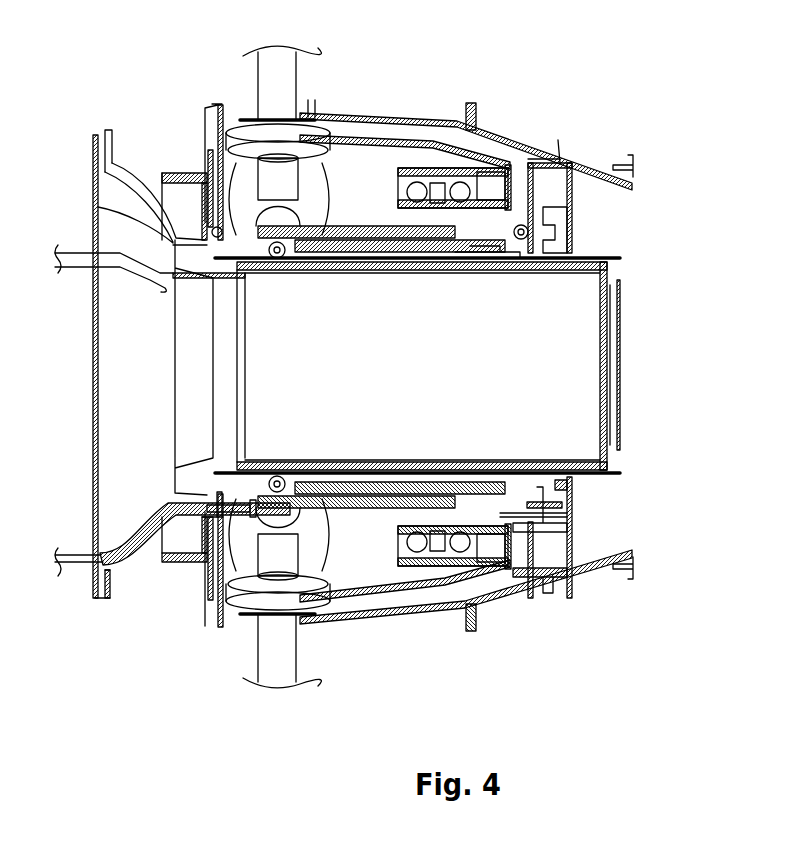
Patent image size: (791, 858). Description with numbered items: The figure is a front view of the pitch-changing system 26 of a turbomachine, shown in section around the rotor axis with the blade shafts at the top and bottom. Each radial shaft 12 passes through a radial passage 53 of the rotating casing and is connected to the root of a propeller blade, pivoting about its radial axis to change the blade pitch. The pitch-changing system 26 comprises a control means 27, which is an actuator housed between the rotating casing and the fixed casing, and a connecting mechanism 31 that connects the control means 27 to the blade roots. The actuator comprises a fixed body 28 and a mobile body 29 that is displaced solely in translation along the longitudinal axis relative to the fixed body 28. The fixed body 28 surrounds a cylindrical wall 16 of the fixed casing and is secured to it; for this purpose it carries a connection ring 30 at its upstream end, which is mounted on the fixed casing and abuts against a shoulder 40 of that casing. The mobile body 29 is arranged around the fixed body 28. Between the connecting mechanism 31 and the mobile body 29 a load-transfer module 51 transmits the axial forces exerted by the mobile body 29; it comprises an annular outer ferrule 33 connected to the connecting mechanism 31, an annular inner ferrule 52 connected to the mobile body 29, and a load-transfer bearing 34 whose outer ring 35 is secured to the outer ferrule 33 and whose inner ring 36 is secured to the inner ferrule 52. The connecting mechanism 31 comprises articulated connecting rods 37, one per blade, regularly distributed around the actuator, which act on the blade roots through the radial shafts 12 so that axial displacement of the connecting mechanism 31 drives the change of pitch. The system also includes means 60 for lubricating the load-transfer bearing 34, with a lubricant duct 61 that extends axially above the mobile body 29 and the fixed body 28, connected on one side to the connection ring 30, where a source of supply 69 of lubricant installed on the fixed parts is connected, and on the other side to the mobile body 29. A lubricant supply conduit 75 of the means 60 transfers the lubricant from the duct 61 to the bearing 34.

The radial shaft 12 is at (258, 72).
The cylindrical wall 16 is at (565, 272).
The pitch-changing system 26 is at (553, 210).
The control means 27 is at (612, 255).
The fixed body 28 is at (445, 258).
The mobile body 29 is at (520, 247).
The connection ring 30 is at (112, 206).
The connecting mechanism 31 is at (385, 160).
The outer ferrule 33 is at (524, 180).
The load-transfer bearing 34 is at (437, 170).
The outer ring 35 is at (447, 557).
The inner ring 36 is at (507, 532).
The connecting rod 37 is at (340, 553).
The shoulder 40 is at (244, 498).
The load-transfer module 51 is at (565, 230).
The inner ferrule 52 is at (564, 503).
The radial passage 53 is at (322, 125).
The means for lubricating 60 is at (578, 527).
The lubricant duct 61 is at (537, 533).
The source of supply 69 is at (62, 562).
The lubricant supply conduit 75 is at (562, 490).